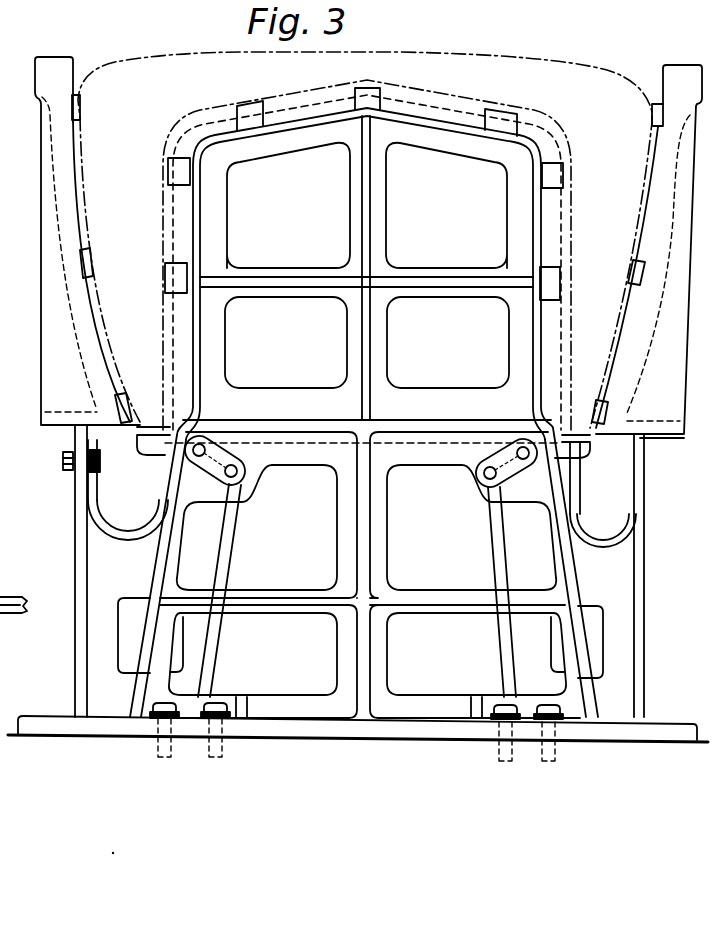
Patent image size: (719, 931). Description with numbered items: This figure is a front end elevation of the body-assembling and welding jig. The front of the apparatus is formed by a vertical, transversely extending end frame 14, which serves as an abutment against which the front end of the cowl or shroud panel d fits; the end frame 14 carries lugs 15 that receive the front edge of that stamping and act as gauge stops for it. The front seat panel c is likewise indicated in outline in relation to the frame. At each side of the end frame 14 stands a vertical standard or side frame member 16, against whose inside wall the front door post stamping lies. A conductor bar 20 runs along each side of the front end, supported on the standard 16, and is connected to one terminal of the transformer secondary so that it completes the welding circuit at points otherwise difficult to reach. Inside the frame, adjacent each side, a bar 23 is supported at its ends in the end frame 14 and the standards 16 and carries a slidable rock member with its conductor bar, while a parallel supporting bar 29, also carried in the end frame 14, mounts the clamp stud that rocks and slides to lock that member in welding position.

The end frame 14 is at (380, 343).
The lugs 15 is at (393, 98).
The vertical standard 16 is at (47, 300).
The conductor bar 20 is at (100, 471).
The bar 23 is at (244, 474).
The supporting bar 29 is at (200, 457).
The front seat panel c is at (530, 66).
The cowl or shroud panel d is at (547, 130).